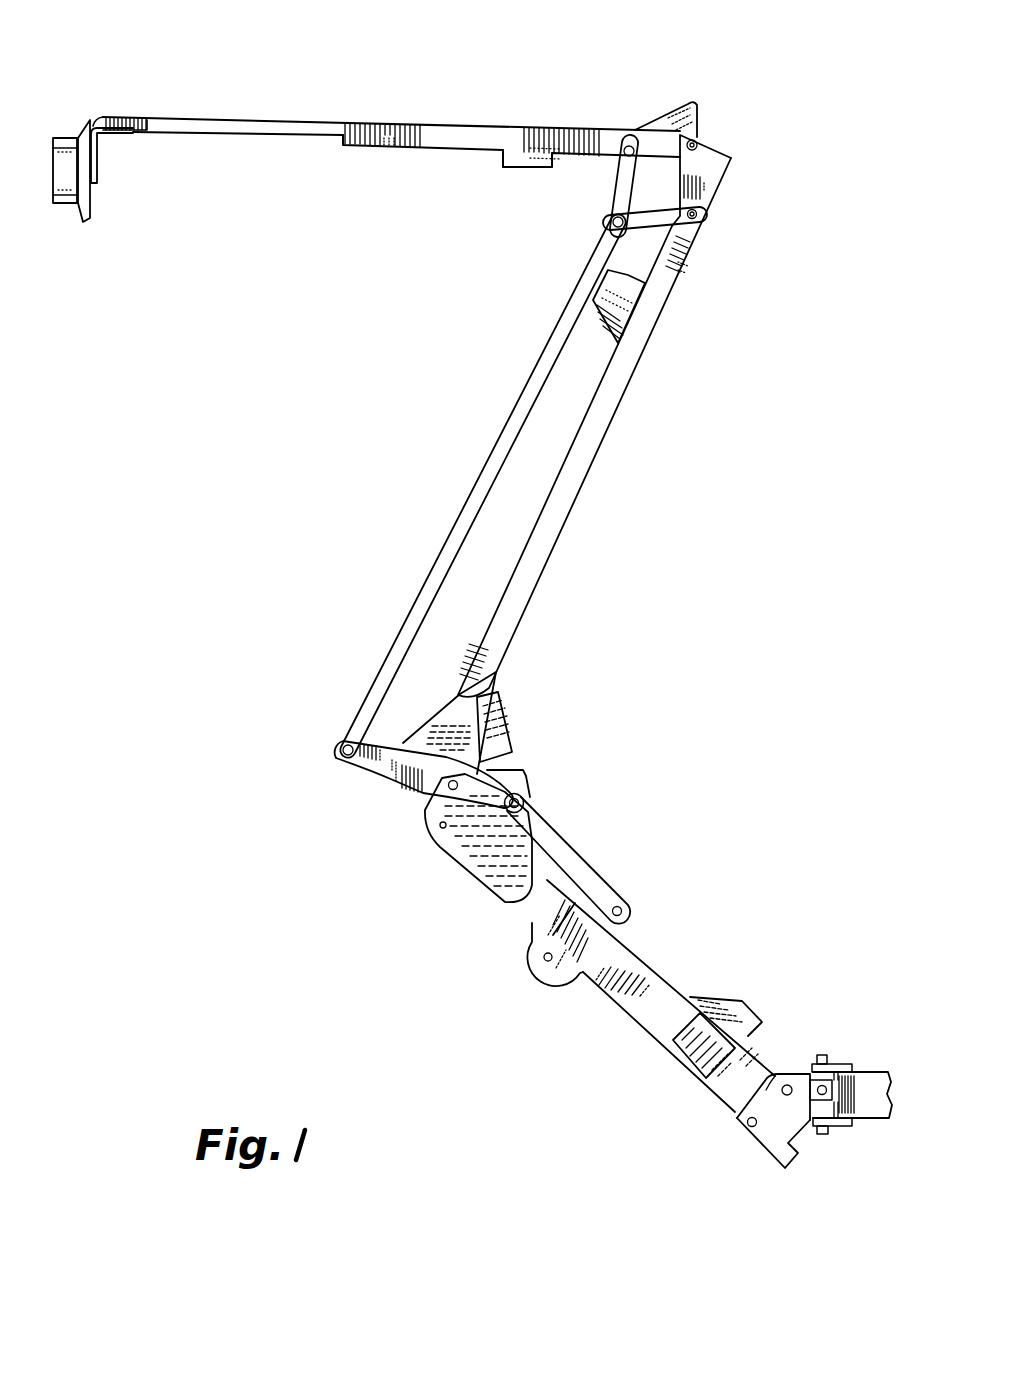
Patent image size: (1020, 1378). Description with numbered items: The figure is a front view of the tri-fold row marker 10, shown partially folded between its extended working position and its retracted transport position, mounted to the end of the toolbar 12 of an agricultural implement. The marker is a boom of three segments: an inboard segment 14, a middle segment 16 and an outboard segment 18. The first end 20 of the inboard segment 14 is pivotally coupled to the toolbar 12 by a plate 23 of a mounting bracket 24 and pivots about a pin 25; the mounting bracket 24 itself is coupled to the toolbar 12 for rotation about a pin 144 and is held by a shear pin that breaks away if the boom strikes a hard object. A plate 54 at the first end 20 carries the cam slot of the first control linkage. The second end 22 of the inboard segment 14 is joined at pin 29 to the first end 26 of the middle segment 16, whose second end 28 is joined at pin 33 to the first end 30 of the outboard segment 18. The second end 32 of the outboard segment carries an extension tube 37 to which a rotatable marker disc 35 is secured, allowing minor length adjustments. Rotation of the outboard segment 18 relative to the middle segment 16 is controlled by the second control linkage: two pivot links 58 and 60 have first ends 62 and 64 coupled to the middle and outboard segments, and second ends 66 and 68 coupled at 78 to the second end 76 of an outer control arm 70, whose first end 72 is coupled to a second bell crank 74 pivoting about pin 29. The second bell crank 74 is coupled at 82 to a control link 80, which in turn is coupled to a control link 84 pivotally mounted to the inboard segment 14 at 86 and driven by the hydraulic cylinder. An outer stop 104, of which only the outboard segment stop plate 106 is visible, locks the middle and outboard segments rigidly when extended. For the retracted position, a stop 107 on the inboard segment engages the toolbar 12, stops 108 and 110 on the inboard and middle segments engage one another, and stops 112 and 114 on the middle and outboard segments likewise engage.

The tri-fold row marker 10 is at (628, 610).
The toolbar 12 is at (873, 1118).
The inboard segment 14 is at (669, 996).
The middle segment 16 is at (549, 562).
The outboard segment 18 is at (386, 128).
The first end 20 is at (748, 1094).
The second end 22 is at (467, 867).
The plate 23 is at (767, 1153).
The mounting bracket 24 is at (782, 1045).
The pin 25 is at (747, 1123).
The first end 26 is at (468, 712).
The second end 28 is at (728, 163).
The pin 29 is at (425, 813).
The first end 30 is at (681, 140).
The second end 32 is at (99, 118).
The pin 33 is at (698, 145).
The marker disc 35 is at (87, 213).
The extension tube 37 is at (210, 120).
The plate 54 is at (720, 1093).
The pivot link 58 is at (703, 207).
The pivot link 60 is at (613, 172).
The first end 62 is at (719, 248).
The first end 64 is at (620, 136).
The second end 66 is at (591, 178).
The second end 68 is at (658, 178).
The outer control arm 70 is at (482, 485).
The first end 72 is at (333, 753).
The second bell crank 74 is at (370, 776).
The second end 76 is at (593, 262).
The pivot connection 78 is at (613, 213).
The control link 80 is at (577, 840).
The pivot connection 82 is at (533, 800).
The control link 84 is at (620, 937).
The pivot mounting 86 is at (532, 950).
The outer stop 104 is at (699, 87).
The outboard segment stop plate 106 is at (668, 110).
The stop 107 is at (672, 977).
The stop 108 is at (533, 773).
The stop 110 is at (513, 740).
The stop 112 is at (593, 303).
The stop 114 is at (512, 168).
The pin 144 is at (822, 1055).